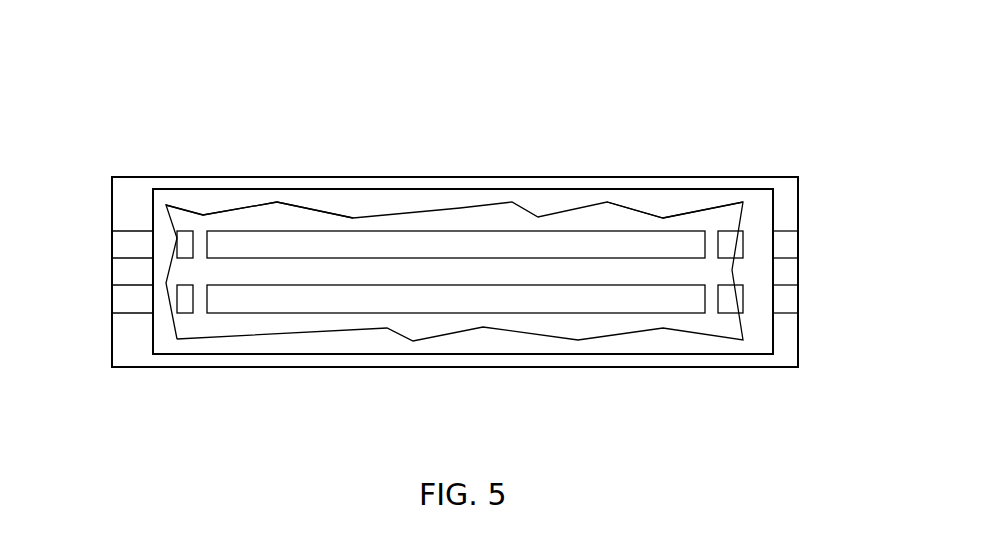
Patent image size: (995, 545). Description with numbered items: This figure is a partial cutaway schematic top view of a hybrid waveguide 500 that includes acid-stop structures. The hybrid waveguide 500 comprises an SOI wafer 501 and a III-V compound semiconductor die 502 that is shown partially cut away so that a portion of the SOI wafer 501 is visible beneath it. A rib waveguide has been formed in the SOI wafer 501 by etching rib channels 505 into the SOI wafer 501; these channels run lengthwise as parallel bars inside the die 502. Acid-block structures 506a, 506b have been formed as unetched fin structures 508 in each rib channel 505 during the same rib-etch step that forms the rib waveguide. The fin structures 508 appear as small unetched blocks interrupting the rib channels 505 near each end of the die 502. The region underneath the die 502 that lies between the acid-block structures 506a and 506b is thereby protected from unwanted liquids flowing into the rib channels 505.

The hybrid waveguide 500 is at (155, 108).
The SOI wafer 501 is at (167, 367).
The III-V compound semiconductor die 502 is at (497, 340).
The rib channel 505 is at (125, 244).
The acid-block structure 506a is at (232, 231).
The acid-block structure 506b is at (673, 228).
The unetched fin structure 508 is at (203, 232).